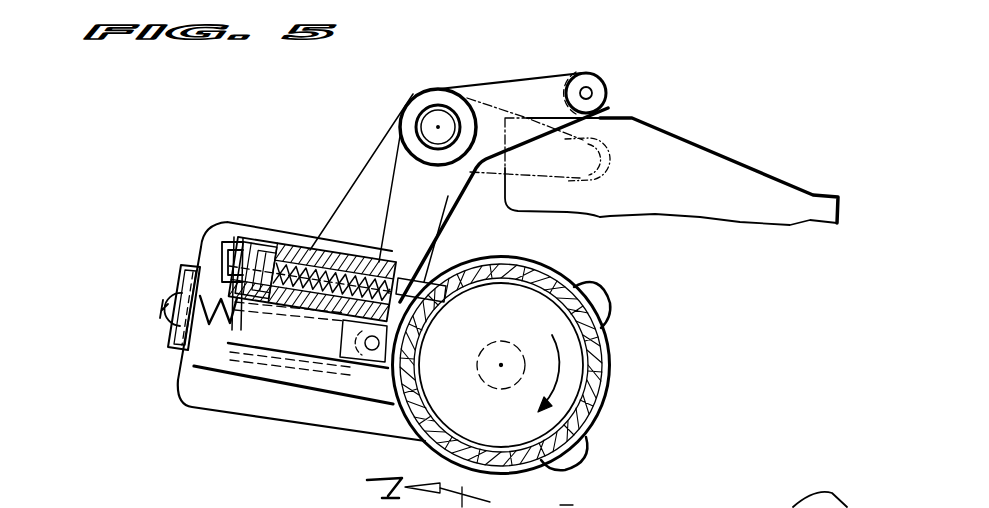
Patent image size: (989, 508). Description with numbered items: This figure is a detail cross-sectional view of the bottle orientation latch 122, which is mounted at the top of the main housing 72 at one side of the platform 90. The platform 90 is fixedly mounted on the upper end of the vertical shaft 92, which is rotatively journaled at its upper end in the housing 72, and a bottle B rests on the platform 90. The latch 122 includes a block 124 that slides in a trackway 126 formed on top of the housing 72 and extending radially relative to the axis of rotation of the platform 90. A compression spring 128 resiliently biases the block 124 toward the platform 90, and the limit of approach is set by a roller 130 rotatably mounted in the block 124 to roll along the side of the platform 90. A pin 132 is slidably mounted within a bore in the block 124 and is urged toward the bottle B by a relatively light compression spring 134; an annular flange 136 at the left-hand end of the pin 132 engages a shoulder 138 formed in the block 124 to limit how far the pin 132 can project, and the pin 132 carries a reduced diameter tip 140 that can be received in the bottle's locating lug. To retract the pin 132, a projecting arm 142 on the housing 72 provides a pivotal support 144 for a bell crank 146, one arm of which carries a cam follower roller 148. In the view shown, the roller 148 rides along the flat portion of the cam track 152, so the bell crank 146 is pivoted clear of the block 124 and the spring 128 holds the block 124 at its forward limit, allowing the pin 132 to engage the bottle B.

The main housing 72 is at (180, 388).
The platform 90 is at (610, 350).
The vertical shaft 92 is at (508, 342).
The bottle B is at (613, 378).
The bottle orientation latch 122 is at (190, 209).
The block 124 is at (273, 328).
The trackway 126 is at (190, 330).
The compression spring 128 is at (192, 312).
The roller 130 is at (392, 383).
The pin 132 is at (393, 262).
The compression spring 134 is at (307, 252).
The annular flange 136 is at (267, 252).
The shoulder 138 is at (290, 250).
The reduced diameter tip 140 is at (482, 248).
The projecting arm 142 is at (453, 203).
The pivotal support 144 is at (437, 127).
The bell crank 146 is at (543, 42).
The cam follower roller 148 is at (604, 80).
The cam track 152 is at (713, 180).